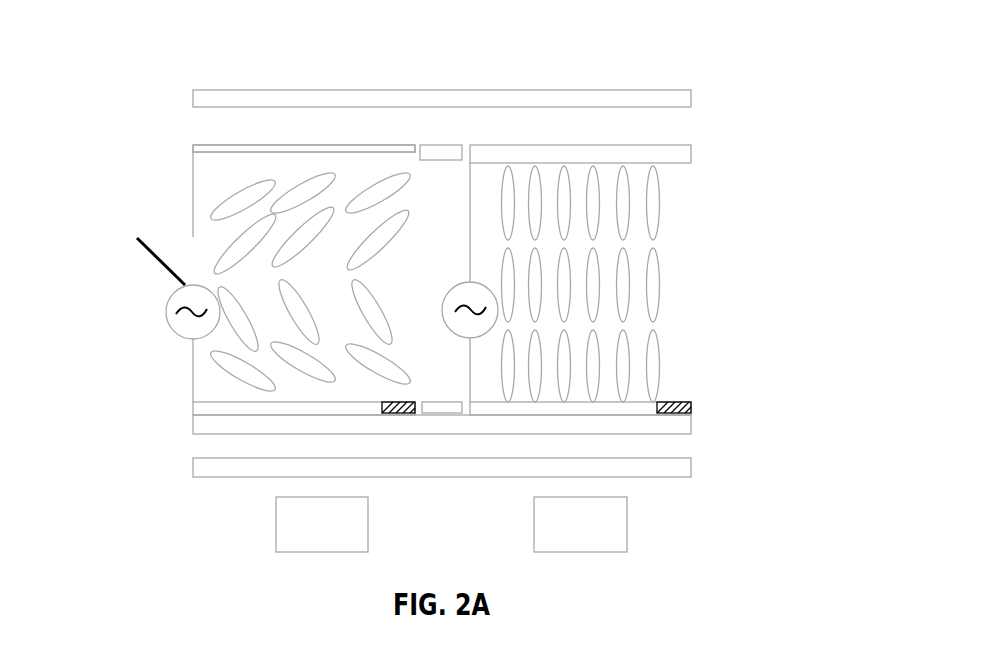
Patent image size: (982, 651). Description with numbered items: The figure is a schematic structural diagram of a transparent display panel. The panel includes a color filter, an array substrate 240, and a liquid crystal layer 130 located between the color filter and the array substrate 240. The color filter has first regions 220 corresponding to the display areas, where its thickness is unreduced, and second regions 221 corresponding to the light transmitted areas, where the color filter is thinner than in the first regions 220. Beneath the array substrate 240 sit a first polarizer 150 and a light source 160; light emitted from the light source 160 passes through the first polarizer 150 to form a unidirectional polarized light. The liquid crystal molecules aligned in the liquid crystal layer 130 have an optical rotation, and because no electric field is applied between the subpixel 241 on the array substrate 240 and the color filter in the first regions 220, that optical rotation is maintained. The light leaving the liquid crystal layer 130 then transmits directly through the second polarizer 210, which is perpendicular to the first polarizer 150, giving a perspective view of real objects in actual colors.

The second polarizer 210 is at (691, 92).
The first regions 220 is at (691, 147).
The second regions 221 is at (192, 152).
The liquid crystal layer 130 is at (660, 290).
The array substrate 240 is at (690, 428).
The subpixel 241 is at (193, 433).
The first polarizer 150 is at (691, 470).
The light source 160 is at (627, 522).